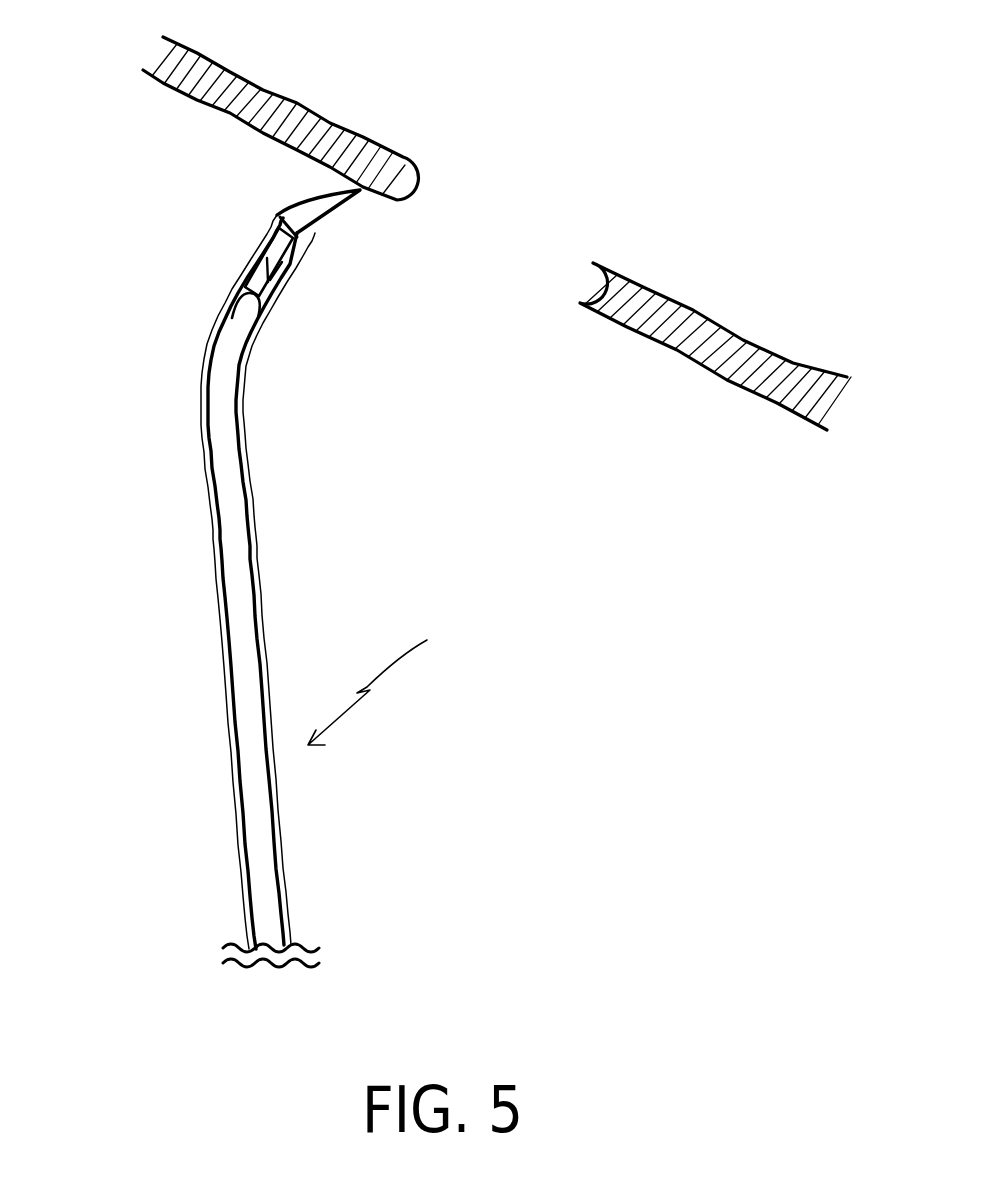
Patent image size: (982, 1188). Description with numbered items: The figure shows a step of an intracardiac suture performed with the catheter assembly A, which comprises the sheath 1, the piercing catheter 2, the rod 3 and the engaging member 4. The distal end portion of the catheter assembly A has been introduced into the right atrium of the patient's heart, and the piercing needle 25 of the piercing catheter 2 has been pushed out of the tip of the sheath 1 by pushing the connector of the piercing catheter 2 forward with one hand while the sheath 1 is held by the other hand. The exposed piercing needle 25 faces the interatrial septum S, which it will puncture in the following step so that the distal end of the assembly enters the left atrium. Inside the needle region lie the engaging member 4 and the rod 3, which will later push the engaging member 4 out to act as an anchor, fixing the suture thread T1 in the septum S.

The interatrial septum S is at (293, 100).
The piercing needle 25 is at (330, 218).
The engaging member 4 is at (287, 263).
The suture thread T1 is at (265, 303).
The rod 3 is at (230, 290).
The sheath 1 is at (203, 467).
The piercing catheter 2 is at (223, 642).
The catheter assembly A is at (388, 673).